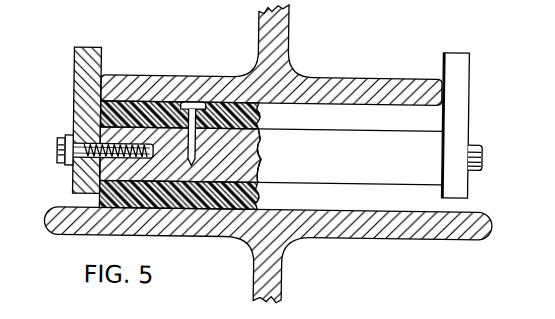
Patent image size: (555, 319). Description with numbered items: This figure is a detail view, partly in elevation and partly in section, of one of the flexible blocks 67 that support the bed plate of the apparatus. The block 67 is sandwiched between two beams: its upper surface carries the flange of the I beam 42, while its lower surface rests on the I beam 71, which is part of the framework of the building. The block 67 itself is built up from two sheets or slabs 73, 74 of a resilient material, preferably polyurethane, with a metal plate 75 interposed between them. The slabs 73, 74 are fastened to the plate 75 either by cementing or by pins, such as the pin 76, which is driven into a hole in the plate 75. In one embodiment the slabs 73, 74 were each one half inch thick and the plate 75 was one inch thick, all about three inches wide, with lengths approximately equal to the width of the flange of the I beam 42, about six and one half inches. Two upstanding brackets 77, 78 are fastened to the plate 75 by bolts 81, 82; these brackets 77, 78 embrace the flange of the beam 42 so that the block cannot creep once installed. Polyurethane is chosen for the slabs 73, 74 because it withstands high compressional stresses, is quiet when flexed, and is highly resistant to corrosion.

The I beam 42 is at (337, 78).
The flexible block 67 is at (477, 127).
The I beam 71 is at (333, 238).
The slab 73 is at (432, 116).
The slab 74 is at (428, 198).
The metal plate 75 is at (357, 164).
The pin 76 is at (196, 151).
The upstanding bracket 77 is at (468, 62).
The upstanding bracket 78 is at (73, 58).
The bolt 81 is at (482, 163).
The bolt 82 is at (58, 147).